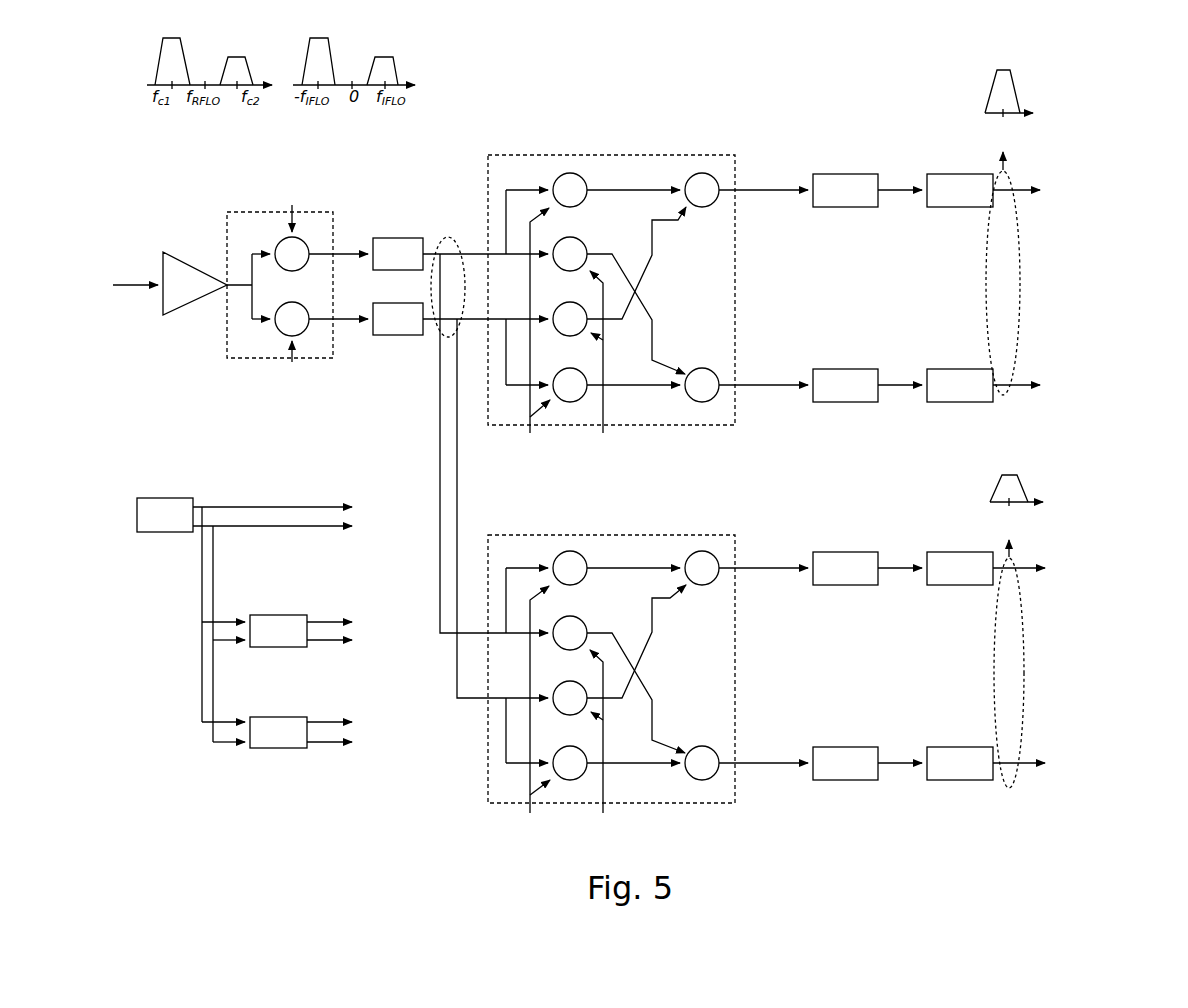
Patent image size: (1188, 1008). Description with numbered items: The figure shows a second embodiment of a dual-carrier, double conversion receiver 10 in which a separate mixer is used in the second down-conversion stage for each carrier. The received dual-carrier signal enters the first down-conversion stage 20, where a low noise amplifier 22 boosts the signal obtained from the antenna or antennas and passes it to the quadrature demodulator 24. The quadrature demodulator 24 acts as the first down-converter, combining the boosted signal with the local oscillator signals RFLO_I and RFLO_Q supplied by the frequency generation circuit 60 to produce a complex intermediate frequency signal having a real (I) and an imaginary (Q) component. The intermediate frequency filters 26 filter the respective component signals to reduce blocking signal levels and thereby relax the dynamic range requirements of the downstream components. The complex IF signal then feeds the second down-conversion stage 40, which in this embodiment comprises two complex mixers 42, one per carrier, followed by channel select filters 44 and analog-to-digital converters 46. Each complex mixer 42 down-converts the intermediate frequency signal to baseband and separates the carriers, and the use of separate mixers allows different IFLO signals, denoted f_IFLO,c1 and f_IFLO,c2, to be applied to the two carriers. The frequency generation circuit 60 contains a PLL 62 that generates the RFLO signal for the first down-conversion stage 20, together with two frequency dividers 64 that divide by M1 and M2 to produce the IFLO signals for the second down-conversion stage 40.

The dual-carrier receiver 10 is at (1056, 68).
The first down-conversion stage 20 is at (125, 160).
The low noise amplifier 22 is at (188, 297).
The quadrature demodulator 24 is at (335, 343).
The intermediate frequency filters 26 is at (415, 237).
The second down-conversion stage 40 is at (731, 100).
The complex mixer 42 is at (700, 425).
The channel select filters 44 is at (868, 174).
The analog-to-digital converters 46 is at (965, 174).
The frequency generation circuit 60 is at (118, 447).
The PLL 62 is at (175, 533).
The frequency dividers 64 is at (288, 648).